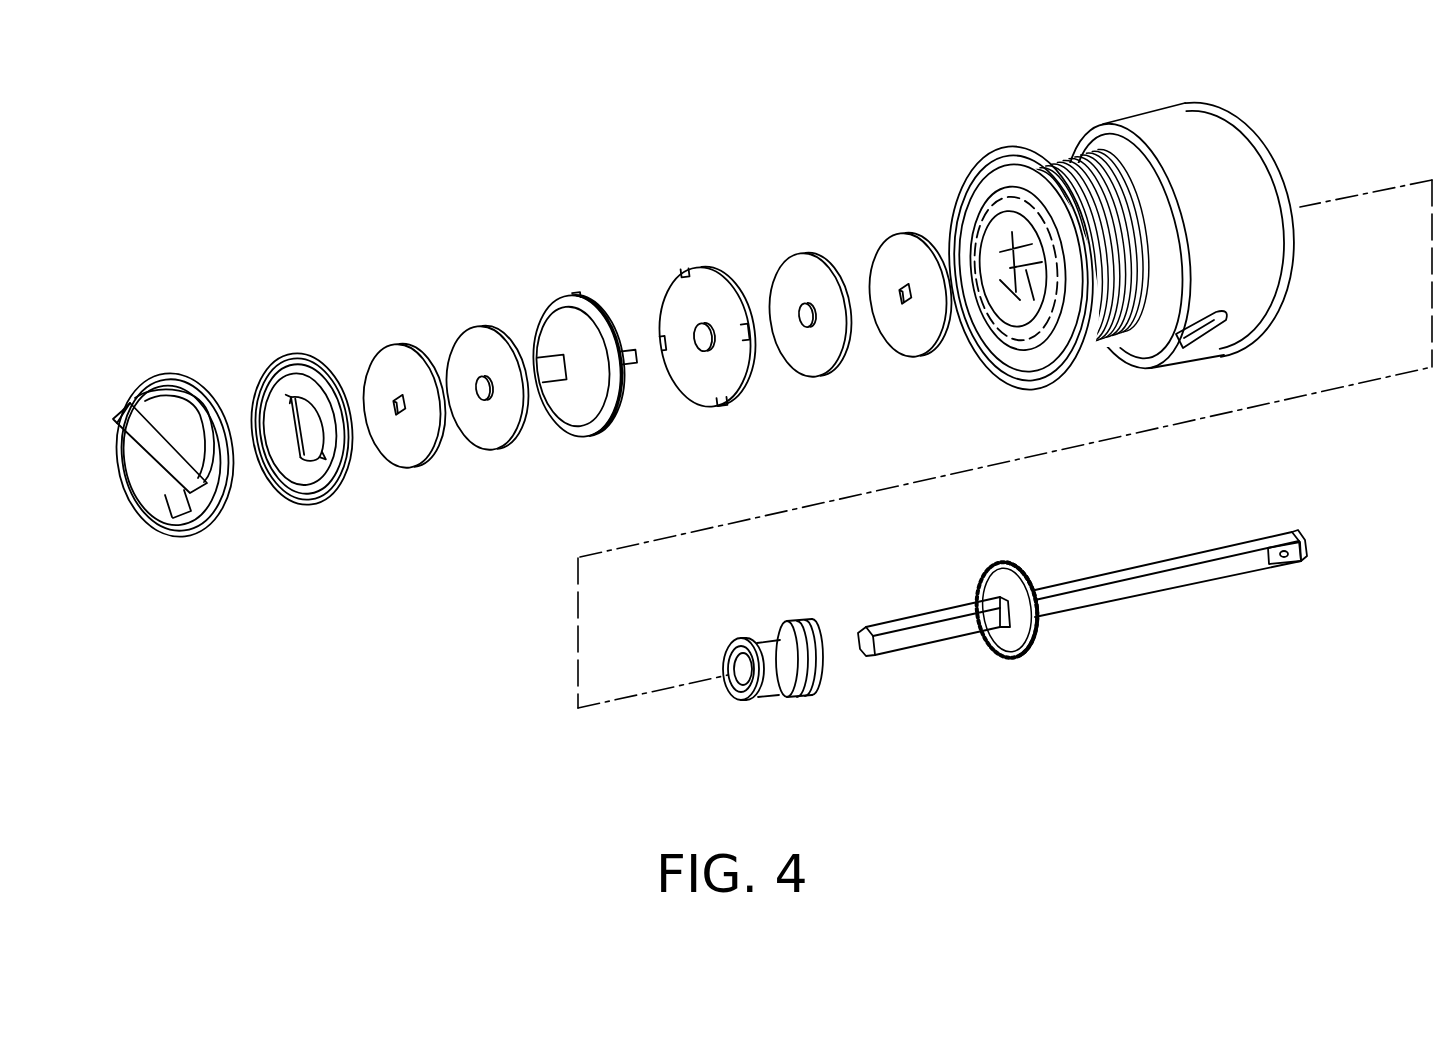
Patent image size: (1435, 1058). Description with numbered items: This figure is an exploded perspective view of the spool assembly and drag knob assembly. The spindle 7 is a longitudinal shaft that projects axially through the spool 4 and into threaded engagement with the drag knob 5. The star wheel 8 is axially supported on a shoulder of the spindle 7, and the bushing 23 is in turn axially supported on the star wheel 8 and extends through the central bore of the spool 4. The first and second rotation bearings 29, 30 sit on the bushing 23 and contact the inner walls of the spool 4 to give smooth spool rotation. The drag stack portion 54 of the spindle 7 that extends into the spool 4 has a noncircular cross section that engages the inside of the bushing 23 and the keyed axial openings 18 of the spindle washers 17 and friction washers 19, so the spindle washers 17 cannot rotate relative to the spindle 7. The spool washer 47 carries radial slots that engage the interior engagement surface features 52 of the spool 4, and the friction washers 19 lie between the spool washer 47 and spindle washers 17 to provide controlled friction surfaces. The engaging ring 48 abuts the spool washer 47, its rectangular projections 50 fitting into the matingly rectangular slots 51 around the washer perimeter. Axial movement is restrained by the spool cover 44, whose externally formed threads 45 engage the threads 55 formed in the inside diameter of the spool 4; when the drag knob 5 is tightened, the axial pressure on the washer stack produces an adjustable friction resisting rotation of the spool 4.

The spool 4 is at (1143, 167).
The drag knob 5 is at (157, 372).
The spindle 7 is at (1193, 587).
The star wheel 8 is at (1032, 655).
The spindle washer 17 is at (393, 347).
The axial opening 18 is at (397, 423).
The friction washer 19 is at (470, 323).
The bushing 23 is at (761, 641).
The first rotation bearing 29 is at (802, 699).
The second rotation bearing 30 is at (760, 698).
The spool cover 44 is at (270, 370).
The externally formed threads 45 is at (316, 352).
The spool washer 47 is at (693, 317).
The engaging ring 48 is at (537, 307).
The projections 50 is at (640, 372).
The slots 51 is at (653, 315).
The interior engagement surface features 52 is at (1007, 247).
The drag stack portion 54 is at (932, 617).
The threads 55 is at (967, 257).